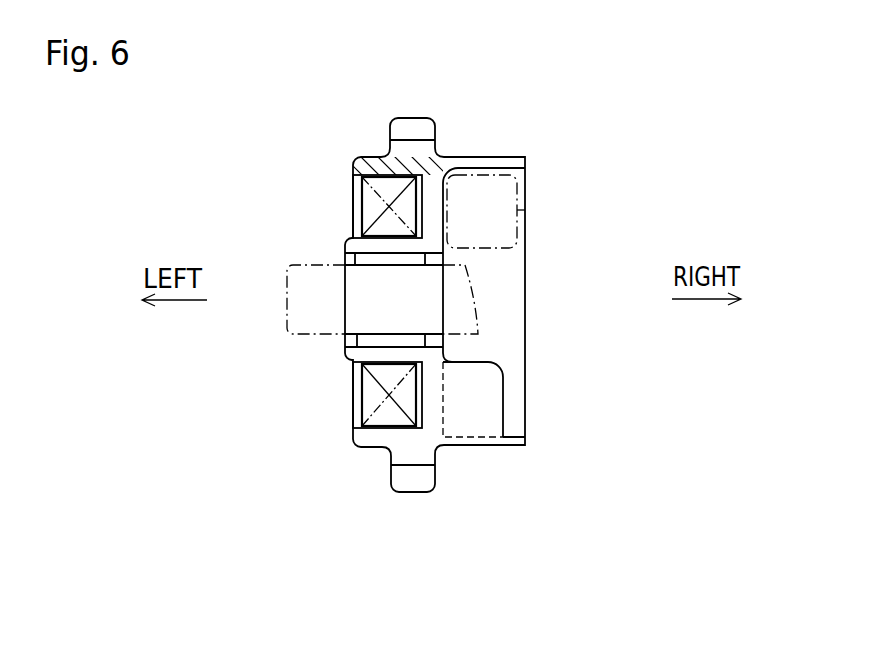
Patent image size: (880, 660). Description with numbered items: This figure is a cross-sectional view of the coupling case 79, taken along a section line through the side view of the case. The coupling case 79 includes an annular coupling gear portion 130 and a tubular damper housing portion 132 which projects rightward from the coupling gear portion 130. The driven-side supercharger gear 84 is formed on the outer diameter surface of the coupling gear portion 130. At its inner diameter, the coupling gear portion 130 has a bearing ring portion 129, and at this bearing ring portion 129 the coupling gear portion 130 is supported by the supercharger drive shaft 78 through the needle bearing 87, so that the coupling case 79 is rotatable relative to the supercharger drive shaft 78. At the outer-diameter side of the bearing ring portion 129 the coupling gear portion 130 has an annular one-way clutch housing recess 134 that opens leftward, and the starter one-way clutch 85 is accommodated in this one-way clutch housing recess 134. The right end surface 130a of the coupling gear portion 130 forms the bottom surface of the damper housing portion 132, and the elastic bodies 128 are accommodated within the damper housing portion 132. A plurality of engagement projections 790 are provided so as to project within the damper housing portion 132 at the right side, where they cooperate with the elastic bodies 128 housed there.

The supercharger drive shaft 78 is at (312, 336).
The coupling case 79 is at (484, 547).
The driven-side supercharger gear 84 is at (404, 127).
The starter one-way clutch 85 is at (378, 404).
The needle bearing 87 is at (362, 340).
The elastic bodies 128 is at (517, 210).
The bearing ring portion 129 is at (366, 256).
The coupling gear portion 130 is at (373, 437).
The right end surface 130a is at (450, 198).
The damper housing portion 132 is at (475, 427).
The one-way clutch housing recess 134 is at (378, 178).
The engagement projections 790 is at (485, 400).